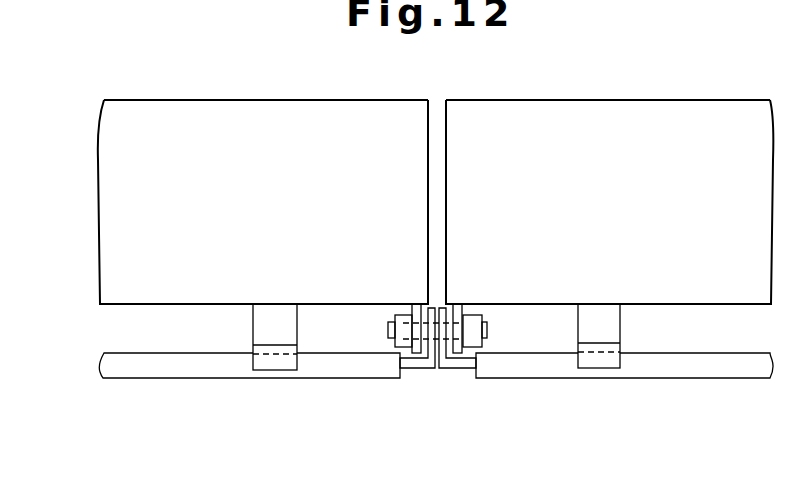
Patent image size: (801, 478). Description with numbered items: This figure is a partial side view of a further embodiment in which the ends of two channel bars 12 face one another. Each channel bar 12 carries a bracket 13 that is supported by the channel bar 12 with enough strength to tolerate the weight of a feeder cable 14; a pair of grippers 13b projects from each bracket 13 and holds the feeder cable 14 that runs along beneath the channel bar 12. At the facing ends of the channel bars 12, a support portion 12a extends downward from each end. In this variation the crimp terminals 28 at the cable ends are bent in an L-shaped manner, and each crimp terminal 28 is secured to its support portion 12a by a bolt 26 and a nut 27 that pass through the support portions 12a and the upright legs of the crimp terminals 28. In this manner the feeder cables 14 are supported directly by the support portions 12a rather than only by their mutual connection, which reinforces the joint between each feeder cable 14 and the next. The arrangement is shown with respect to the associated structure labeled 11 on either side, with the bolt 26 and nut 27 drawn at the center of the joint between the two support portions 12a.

The solar cell module 11 is at (226, 100).
The channel bar 12 is at (327, 100).
The support portion 12a is at (413, 304).
The bracket 13 is at (253, 323).
The gripper 13b is at (273, 360).
The feeder cable 14 is at (143, 378).
The bolt 26 is at (487, 328).
The nut 27 is at (388, 325).
The crimp terminal 28 is at (457, 370).